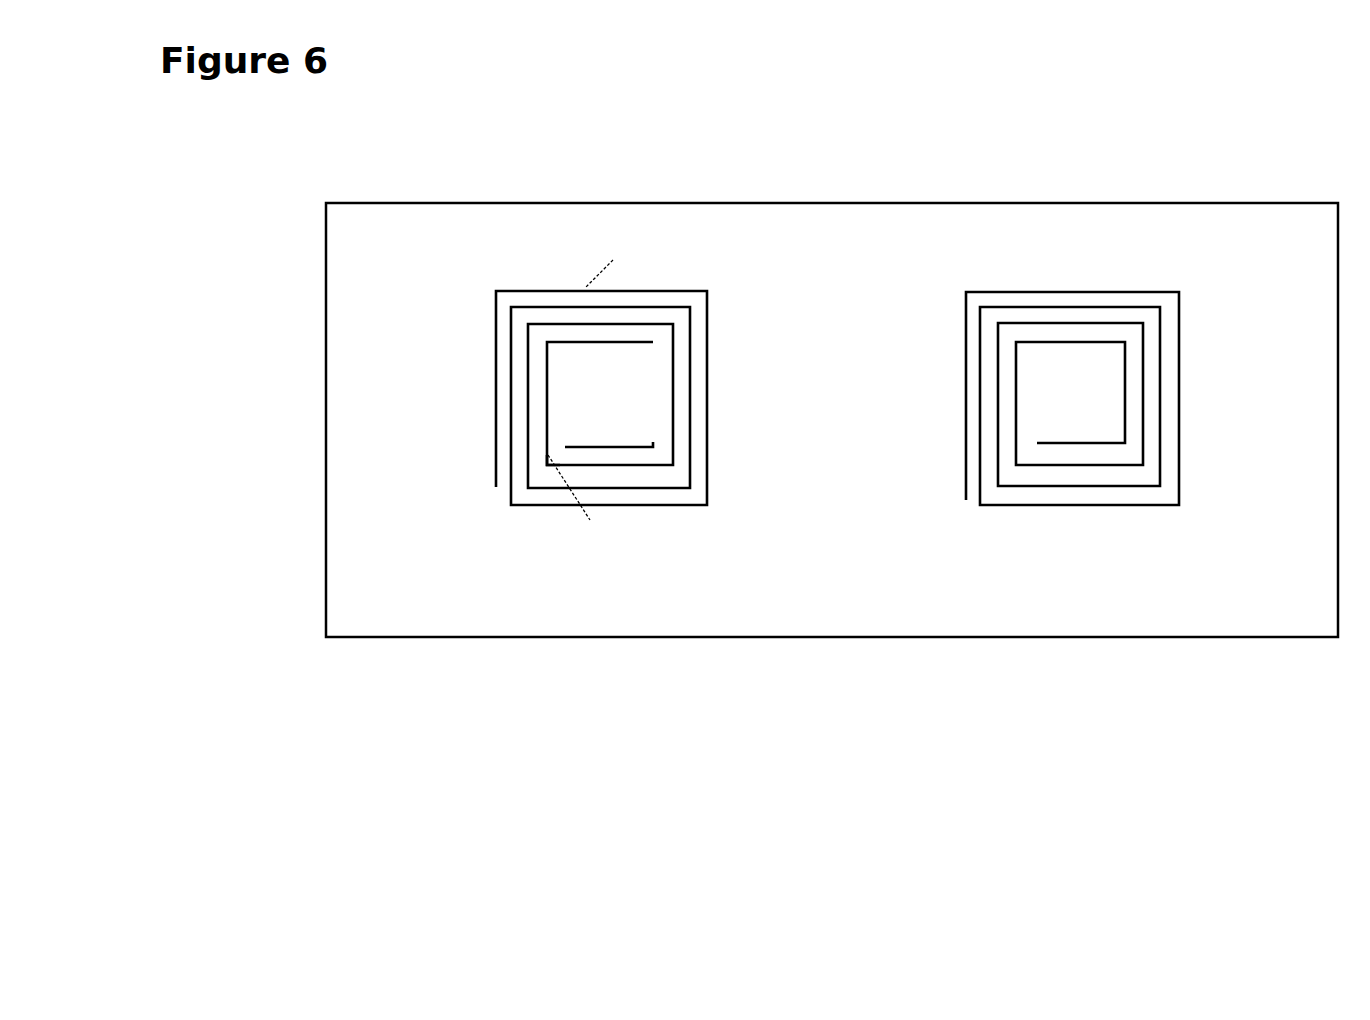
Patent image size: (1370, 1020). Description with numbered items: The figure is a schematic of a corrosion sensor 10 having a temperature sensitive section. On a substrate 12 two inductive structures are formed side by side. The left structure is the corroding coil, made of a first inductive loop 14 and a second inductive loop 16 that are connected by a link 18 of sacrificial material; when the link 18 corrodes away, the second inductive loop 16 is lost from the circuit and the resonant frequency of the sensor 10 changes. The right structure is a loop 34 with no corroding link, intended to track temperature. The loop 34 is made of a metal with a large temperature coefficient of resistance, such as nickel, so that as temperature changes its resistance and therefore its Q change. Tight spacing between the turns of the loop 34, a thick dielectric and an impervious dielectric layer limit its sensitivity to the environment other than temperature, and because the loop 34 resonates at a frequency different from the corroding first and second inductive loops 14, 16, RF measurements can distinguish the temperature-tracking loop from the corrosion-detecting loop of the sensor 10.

The corrosion sensor 10 is at (807, 134).
The substrate 12 is at (388, 268).
The first inductive loop 14 is at (483, 438).
The second inductive loop 16 is at (649, 453).
The link 18 is at (538, 461).
The loop 34 is at (959, 475).